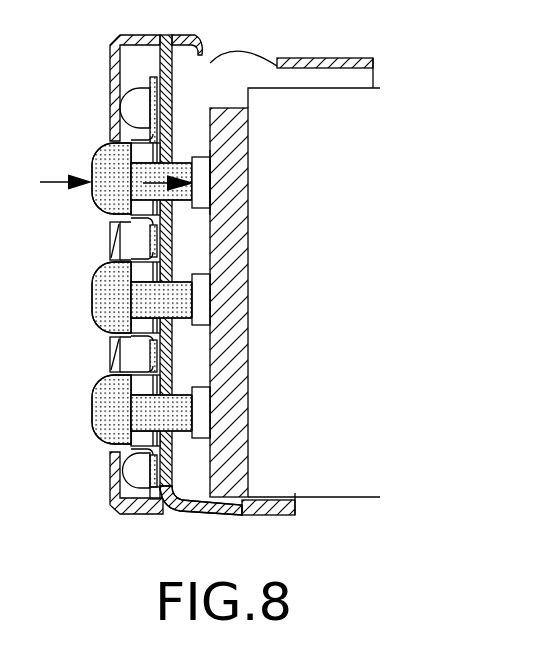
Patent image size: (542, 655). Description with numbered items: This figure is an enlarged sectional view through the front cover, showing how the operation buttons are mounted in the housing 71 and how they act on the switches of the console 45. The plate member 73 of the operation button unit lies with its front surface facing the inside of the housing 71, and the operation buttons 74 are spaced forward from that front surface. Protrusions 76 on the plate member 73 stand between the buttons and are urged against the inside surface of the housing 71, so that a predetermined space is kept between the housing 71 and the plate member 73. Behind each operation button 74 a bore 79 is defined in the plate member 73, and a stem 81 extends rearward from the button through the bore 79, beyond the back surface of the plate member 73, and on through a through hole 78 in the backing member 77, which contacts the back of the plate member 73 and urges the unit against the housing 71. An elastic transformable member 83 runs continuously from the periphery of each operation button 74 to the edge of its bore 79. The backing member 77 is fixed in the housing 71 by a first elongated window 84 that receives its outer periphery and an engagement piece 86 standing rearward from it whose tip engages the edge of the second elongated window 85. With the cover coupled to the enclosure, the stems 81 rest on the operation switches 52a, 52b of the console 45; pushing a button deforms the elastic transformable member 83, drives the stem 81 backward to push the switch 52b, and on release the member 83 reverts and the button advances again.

The console 45 is at (233, 107).
The housing 71 is at (112, 41).
The plate member 73 is at (165, 88).
The operation button 74 is at (90, 165).
The protrusion 76 is at (128, 107).
The backing member 77 is at (165, 88).
The through hole 78 is at (194, 293).
The bore 79 is at (128, 217).
The stem 81 is at (195, 158).
The elastic transformable member 83 is at (145, 222).
The first elongated window 84 is at (165, 35).
The second elongated window 85 is at (165, 514).
The engagement piece 86 is at (216, 513).
The operation switch 52b is at (207, 197).
The operation switch 52a is at (332, 189).